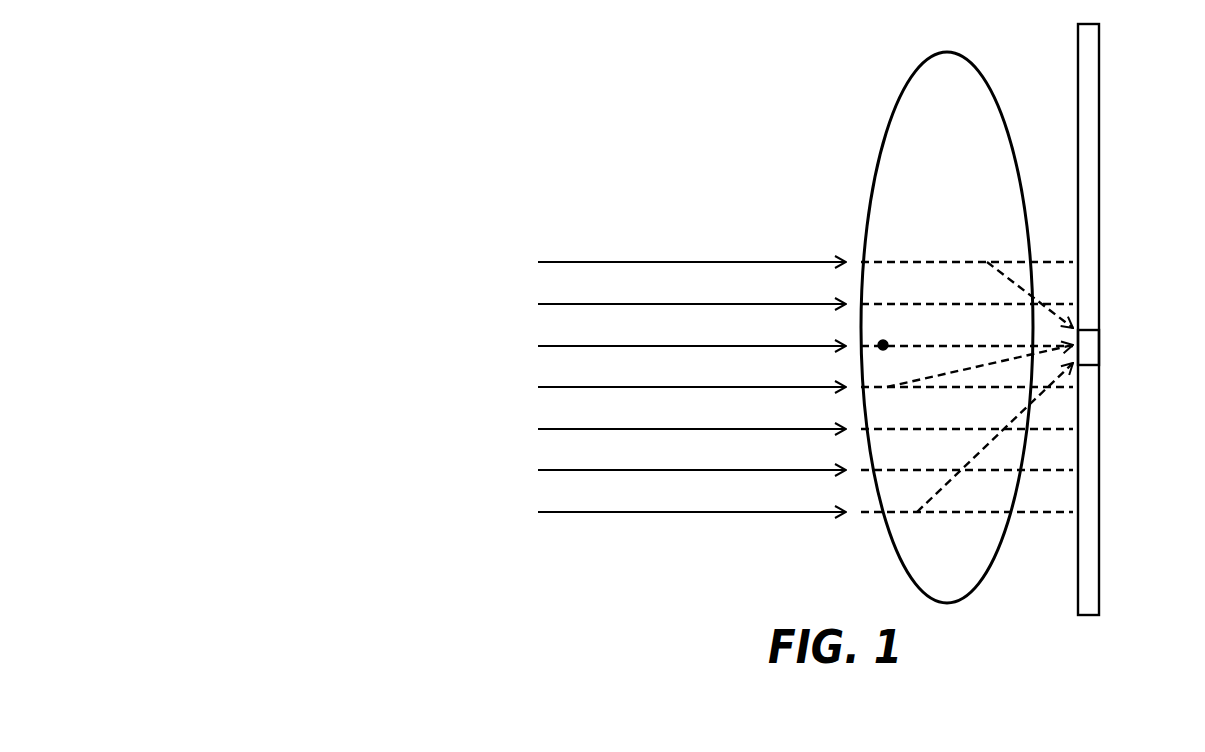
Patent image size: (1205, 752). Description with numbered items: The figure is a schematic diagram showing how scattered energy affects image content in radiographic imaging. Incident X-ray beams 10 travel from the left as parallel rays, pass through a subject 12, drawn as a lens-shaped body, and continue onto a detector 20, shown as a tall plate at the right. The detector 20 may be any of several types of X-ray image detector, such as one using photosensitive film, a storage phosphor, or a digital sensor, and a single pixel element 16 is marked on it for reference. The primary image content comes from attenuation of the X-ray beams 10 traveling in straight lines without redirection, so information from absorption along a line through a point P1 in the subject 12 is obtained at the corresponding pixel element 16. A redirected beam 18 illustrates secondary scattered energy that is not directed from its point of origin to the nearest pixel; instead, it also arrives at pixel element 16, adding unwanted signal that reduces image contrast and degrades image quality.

The incident X-ray beams 10 is at (490, 252).
The subject 12 is at (873, 180).
The pixel element 16 is at (1098, 352).
The redirected beam 18 is at (953, 480).
The detector 20 is at (1100, 98).
The point P1 is at (883, 340).